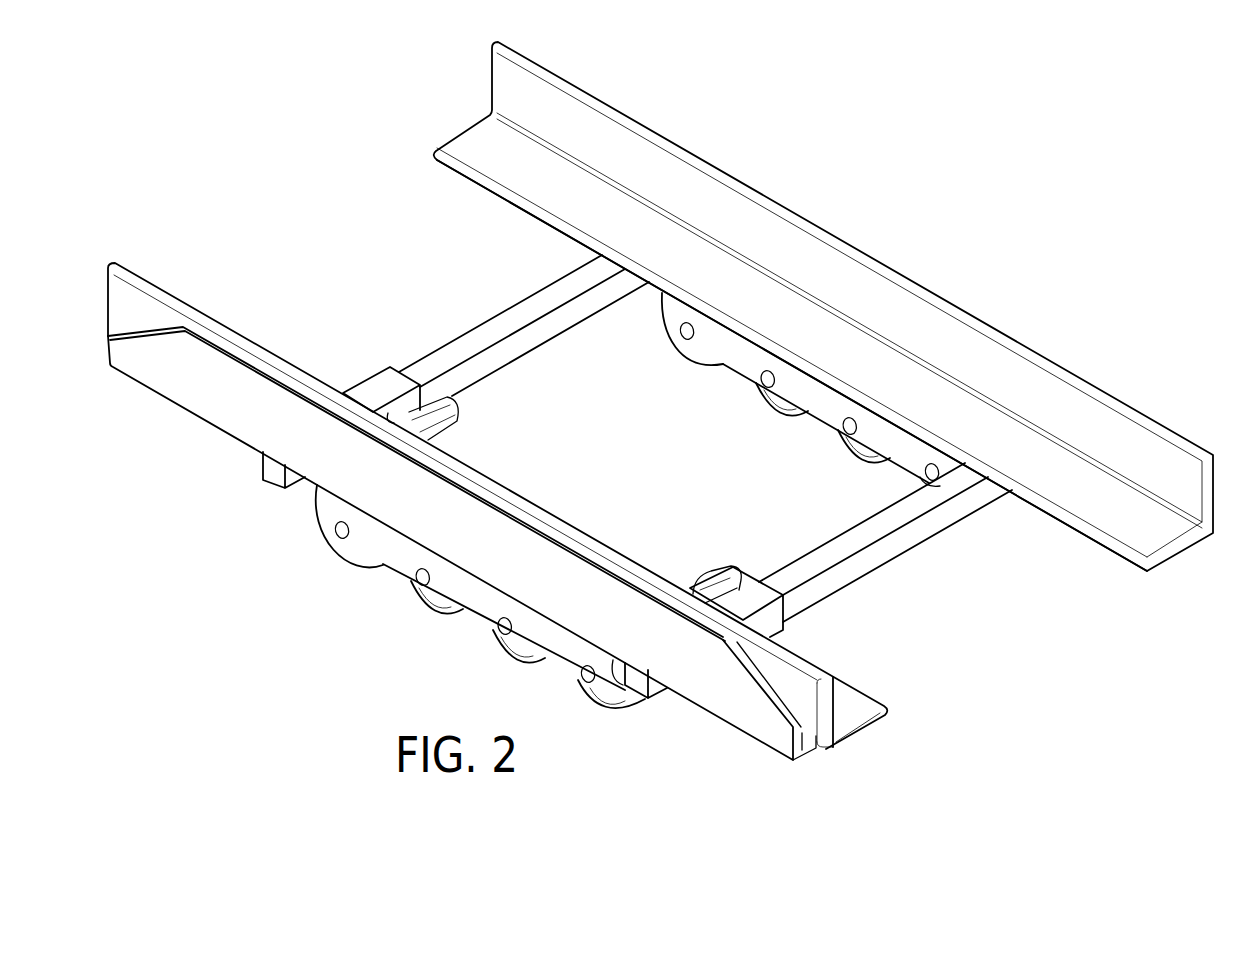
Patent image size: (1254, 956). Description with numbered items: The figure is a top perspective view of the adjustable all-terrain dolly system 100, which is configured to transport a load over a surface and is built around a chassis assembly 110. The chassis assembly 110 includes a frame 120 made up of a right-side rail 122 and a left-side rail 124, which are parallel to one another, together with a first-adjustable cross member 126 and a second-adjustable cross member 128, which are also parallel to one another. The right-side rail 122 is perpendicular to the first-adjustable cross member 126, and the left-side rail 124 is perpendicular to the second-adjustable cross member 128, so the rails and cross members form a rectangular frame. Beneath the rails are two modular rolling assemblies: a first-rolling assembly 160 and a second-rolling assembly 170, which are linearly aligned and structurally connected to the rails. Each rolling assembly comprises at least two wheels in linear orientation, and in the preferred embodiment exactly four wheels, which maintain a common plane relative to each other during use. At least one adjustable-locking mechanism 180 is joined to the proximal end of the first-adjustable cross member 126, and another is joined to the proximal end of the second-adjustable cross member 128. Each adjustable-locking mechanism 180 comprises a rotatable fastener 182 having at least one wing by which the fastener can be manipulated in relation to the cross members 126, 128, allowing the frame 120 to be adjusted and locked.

The adjustable all-terrain dolly system 100 is at (1084, 106).
The chassis assembly 110 is at (1148, 134).
The frame 120 is at (825, 330).
The right-side rail 122 is at (1170, 566).
The left-side rail 124 is at (722, 712).
The first-adjustable cross member 126 is at (830, 556).
The second-adjustable cross member 128 is at (468, 334).
The first-rolling assembly 160 is at (298, 518).
The second-rolling assembly 170 is at (716, 394).
The adjustable-locking mechanism 180 is at (380, 378).
The rotatable fastener 182 is at (457, 420).